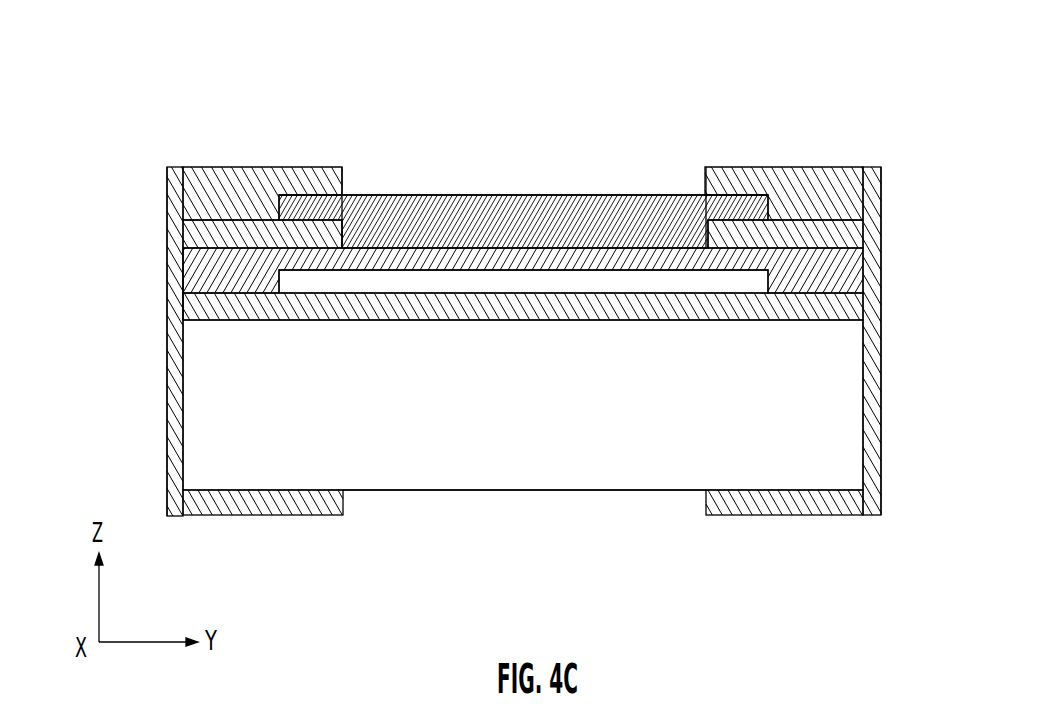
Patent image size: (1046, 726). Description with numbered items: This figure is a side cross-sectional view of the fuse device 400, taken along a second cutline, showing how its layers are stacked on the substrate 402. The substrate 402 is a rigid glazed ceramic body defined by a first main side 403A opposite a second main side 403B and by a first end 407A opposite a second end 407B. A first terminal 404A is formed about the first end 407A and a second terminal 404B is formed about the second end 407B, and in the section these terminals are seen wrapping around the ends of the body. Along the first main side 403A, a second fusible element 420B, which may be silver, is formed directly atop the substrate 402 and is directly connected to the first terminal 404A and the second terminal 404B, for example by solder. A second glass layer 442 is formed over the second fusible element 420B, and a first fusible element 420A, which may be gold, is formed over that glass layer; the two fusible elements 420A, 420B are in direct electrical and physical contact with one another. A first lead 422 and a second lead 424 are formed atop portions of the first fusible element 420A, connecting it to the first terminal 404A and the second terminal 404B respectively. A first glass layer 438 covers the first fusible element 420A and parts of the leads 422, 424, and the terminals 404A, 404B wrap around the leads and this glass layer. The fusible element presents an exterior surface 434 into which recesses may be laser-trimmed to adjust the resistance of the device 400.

The fuse device 400 is at (866, 114).
The substrate 402 is at (830, 453).
The first main side 403A is at (207, 310).
The second main side 403B is at (407, 490).
The first terminal 404A is at (203, 172).
The second terminal 404B is at (870, 192).
The first end 407A is at (155, 432).
The second end 407B is at (890, 478).
The first fusible element 420A is at (850, 267).
The second fusible element 420B is at (842, 313).
The first lead 422 is at (243, 230).
The second lead 424 is at (805, 238).
The exterior surface 434 is at (375, 245).
The first glass layer 438 is at (642, 208).
The second glass layer 442 is at (658, 283).